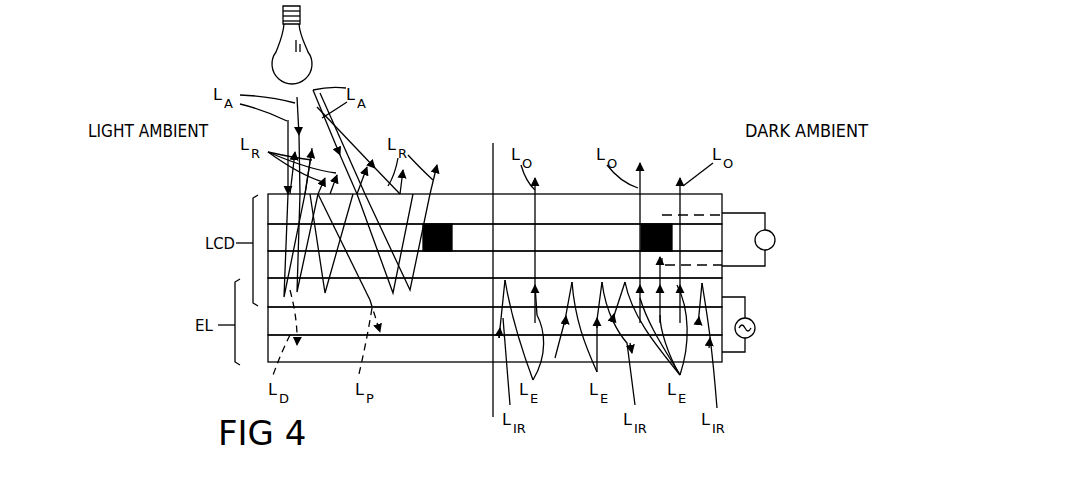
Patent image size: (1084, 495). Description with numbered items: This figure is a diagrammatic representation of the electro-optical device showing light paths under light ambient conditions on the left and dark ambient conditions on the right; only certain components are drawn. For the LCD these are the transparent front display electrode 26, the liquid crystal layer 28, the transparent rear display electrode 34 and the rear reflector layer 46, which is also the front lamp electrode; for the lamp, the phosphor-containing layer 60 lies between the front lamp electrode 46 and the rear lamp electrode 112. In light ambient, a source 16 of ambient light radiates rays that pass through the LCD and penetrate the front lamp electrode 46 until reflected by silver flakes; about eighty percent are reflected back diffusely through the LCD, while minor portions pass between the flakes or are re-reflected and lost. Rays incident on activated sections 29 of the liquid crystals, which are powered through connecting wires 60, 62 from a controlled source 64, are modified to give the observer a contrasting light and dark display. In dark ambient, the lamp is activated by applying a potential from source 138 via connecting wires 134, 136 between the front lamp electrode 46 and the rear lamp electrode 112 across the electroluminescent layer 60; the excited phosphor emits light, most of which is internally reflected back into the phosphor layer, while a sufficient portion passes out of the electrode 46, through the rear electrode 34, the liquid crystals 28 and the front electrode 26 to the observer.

The source of ambient light 16 is at (302, 57).
The transparent front display electrode 26 is at (466, 216).
The liquid crystal layer 28 is at (466, 244).
The activated sections of the liquid crystals 29 is at (440, 224).
The transparent rear display electrode 34 is at (466, 271).
The front lamp electrode 46 is at (466, 301).
The phosphor-containing layer 60 is at (466, 329).
The connecting wire 62 is at (752, 267).
The controlled source 64 is at (775, 240).
The rear lamp electrode 112 is at (486, 356).
The connecting wire 134 is at (746, 300).
The connecting wire 136 is at (746, 352).
The source 138 is at (756, 329).